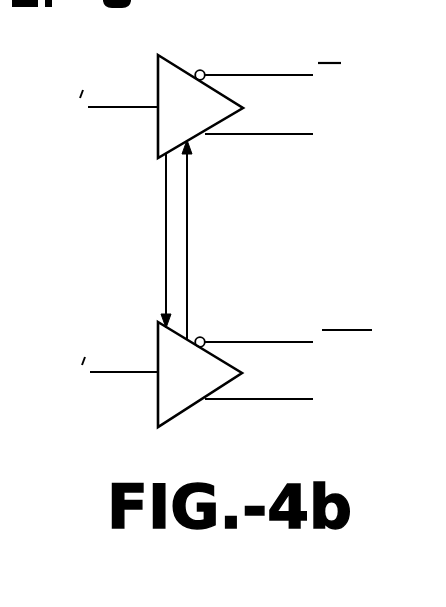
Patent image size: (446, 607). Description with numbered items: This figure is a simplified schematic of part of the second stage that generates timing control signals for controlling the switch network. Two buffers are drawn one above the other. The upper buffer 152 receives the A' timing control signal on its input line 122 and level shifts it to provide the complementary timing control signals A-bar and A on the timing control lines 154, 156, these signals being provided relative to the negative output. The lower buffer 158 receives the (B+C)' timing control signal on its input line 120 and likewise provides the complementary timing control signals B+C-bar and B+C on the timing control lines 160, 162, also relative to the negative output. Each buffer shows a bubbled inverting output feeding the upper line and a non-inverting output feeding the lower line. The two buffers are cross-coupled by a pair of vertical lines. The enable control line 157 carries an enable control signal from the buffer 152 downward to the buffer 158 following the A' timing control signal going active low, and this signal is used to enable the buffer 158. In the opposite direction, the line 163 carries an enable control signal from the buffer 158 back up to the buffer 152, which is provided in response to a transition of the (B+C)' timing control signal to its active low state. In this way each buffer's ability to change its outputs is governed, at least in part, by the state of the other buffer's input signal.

The buffer 152 is at (180, 69).
The timing control line 154 is at (244, 77).
The timing control line 156 is at (245, 135).
The input line A' 122 is at (140, 108).
The enable control line 157 is at (166, 257).
The upward control line/arrow 163 is at (188, 232).
The buffer 158 is at (178, 413).
The input line (B+C)' 120 is at (140, 375).
The timing control line 160 is at (257, 344).
The timing control line 162 is at (260, 400).